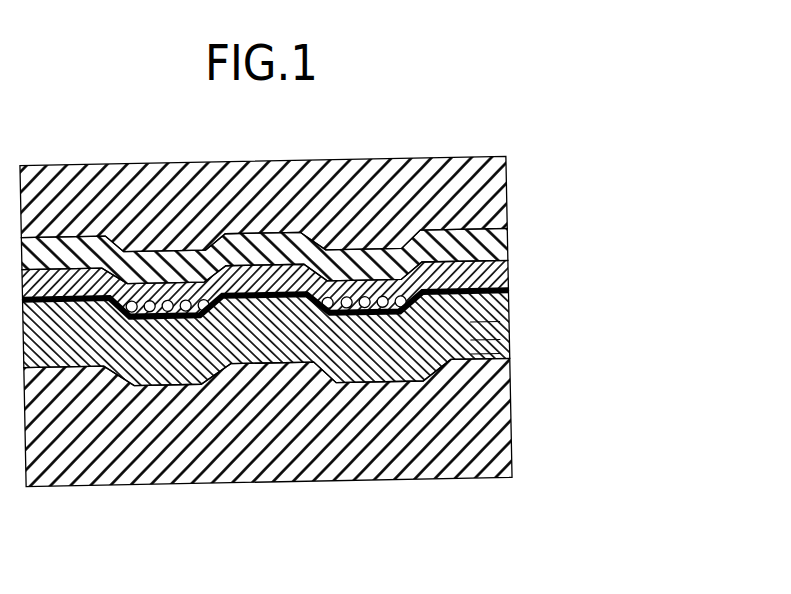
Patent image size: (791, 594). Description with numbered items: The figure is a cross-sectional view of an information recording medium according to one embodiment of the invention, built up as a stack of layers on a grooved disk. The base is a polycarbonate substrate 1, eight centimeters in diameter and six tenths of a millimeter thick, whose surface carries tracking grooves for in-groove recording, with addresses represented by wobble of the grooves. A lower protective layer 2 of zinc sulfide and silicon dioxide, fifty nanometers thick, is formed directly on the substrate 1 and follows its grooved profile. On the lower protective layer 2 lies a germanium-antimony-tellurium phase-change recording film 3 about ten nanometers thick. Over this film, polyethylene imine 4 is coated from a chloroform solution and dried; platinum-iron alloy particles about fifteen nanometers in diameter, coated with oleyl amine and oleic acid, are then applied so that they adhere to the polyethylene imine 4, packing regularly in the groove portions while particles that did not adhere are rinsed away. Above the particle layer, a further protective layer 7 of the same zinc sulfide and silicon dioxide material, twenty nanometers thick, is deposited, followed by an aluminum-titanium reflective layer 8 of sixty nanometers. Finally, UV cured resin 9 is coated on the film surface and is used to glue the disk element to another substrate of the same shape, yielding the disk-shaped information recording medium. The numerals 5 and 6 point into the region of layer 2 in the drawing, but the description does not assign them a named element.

The polycarbonate substrate 1 is at (497, 435).
The lower protective layer 2 is at (497, 303).
The phase-change recording film 3 is at (507, 287).
The polyethylene imine 4 is at (508, 368).
The second sub-layer 5 is at (507, 348).
The third sub-layer 6 is at (503, 330).
The protective layer 7 is at (497, 272).
The reflective layer 8 is at (497, 248).
The UV cured resin 9 is at (500, 213).